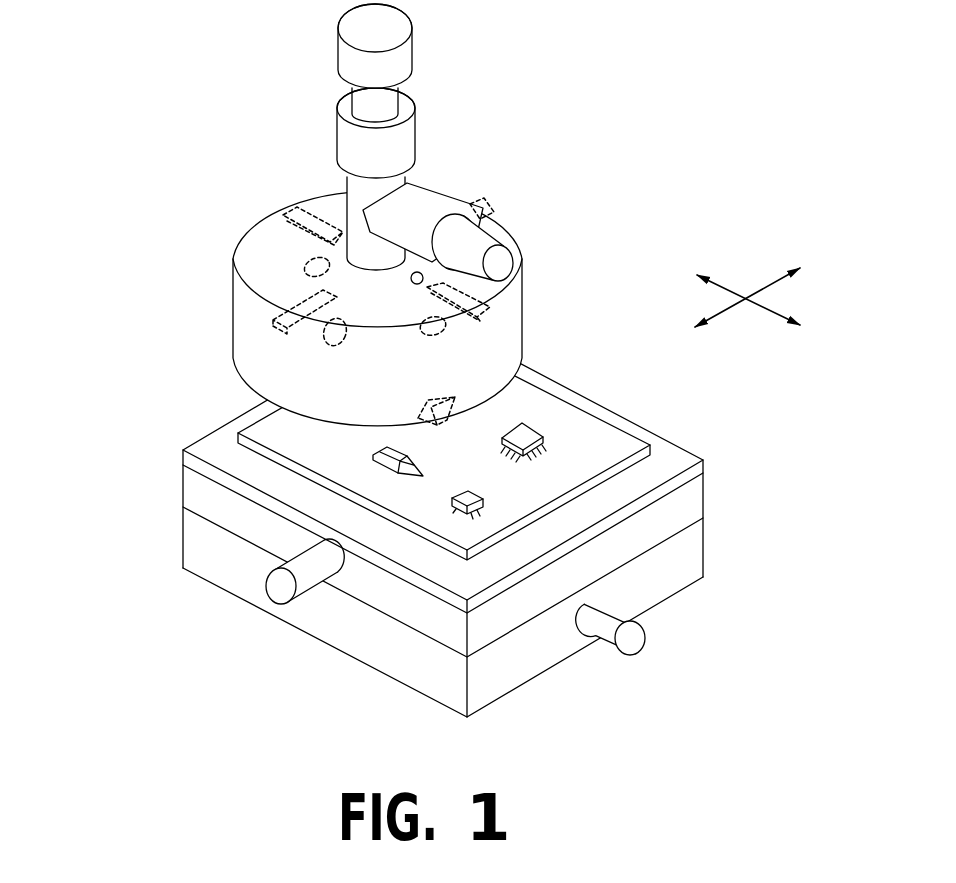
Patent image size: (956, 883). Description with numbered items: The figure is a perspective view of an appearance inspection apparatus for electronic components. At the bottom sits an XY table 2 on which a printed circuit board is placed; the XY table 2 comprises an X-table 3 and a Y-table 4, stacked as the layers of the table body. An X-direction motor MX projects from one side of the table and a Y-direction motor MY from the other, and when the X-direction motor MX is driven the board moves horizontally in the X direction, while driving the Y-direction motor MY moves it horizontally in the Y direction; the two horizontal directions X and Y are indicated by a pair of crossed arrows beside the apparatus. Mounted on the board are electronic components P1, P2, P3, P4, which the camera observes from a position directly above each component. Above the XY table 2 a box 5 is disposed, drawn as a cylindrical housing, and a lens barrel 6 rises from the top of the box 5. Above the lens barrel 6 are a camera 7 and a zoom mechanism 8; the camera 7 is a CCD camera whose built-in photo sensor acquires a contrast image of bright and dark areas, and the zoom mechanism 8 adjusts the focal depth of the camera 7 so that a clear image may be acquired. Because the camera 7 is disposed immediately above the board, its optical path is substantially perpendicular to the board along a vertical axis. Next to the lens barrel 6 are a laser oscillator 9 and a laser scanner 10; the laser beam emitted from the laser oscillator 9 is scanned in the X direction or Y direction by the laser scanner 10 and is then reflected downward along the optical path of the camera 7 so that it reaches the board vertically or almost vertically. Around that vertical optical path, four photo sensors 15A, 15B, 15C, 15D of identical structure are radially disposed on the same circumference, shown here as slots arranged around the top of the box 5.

The XY table 2 is at (384, 515).
The X-table 3 is at (377, 653).
The Y-table 4 is at (453, 640).
The box 5 is at (243, 347).
The lens barrel 6 is at (352, 183).
The camera 7 is at (400, 55).
The zoom mechanism 8 is at (402, 140).
The laser oscillator 9 is at (496, 250).
The laser scanner 10 is at (435, 204).
The photo sensor 15A is at (281, 228).
The photo sensor 15B is at (492, 205).
The photo sensor 15C is at (493, 316).
The photo sensor 15D is at (266, 318).
The electronic component P1 is at (457, 405).
The electronic component P2 is at (372, 455).
The electronic component P3 is at (532, 437).
The electronic component P4 is at (457, 513).
The X-direction motor MX is at (627, 645).
The Y-direction motor MY is at (282, 590).
The X-direction X is at (735, 285).
The Y-direction Y is at (735, 285).